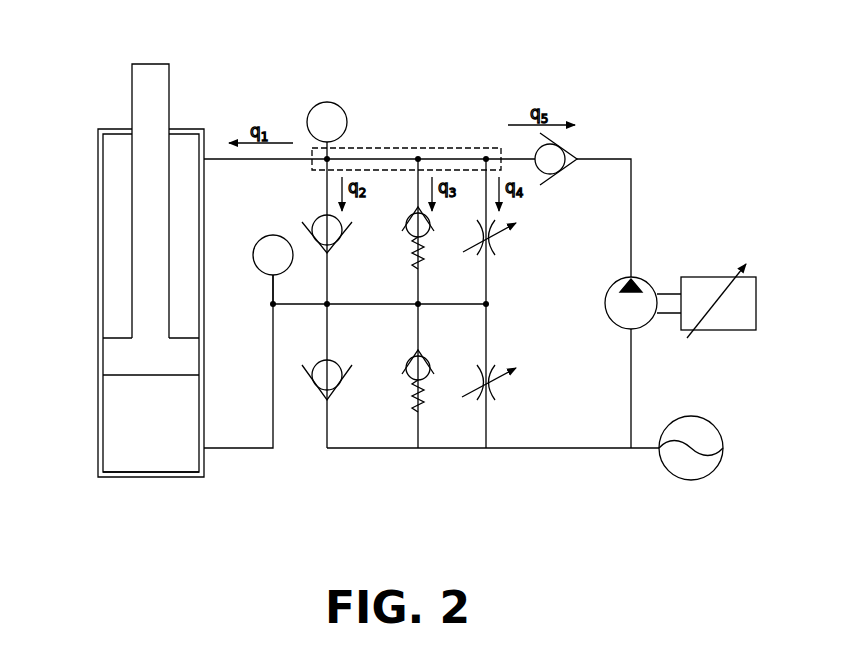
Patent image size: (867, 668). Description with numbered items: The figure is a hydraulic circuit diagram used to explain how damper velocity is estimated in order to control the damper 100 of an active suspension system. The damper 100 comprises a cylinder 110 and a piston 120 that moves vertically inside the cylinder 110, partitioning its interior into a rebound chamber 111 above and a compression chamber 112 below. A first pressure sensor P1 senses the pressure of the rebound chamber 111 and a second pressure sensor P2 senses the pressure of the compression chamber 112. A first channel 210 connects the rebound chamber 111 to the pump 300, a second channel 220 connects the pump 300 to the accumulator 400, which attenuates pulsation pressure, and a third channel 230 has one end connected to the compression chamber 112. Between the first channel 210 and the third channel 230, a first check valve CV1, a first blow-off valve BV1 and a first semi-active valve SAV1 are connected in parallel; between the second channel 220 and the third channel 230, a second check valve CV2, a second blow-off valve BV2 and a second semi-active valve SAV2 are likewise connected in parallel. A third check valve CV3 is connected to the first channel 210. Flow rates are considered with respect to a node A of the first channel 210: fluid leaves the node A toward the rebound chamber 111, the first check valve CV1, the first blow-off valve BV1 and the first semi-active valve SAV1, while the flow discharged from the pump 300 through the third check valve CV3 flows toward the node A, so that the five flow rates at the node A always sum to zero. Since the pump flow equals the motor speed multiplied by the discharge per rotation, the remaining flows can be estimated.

The damper 100 is at (92, 105).
The cylinder 110 is at (98, 182).
The rebound chamber 111 is at (113, 274).
The compression chamber 112 is at (150, 450).
The piston 120 is at (150, 68).
The first channel 210 is at (450, 148).
The second channel 220 is at (228, 450).
The third channel 230 is at (460, 450).
The pump 300 is at (640, 276).
The accumulator 400 is at (689, 481).
The node A is at (374, 148).
The first pressure sensor P1 is at (327, 130).
The second pressure sensor P2 is at (273, 269).
The first check valve CV1 is at (342, 240).
The second check valve CV2 is at (335, 361).
The third check valve CV3 is at (565, 143).
The first blow-off valve BV1 is at (424, 253).
The second blow-off valve BV2 is at (430, 357).
The first semi-active valve SAV1 is at (495, 251).
The second semi-active valve SAV2 is at (495, 396).